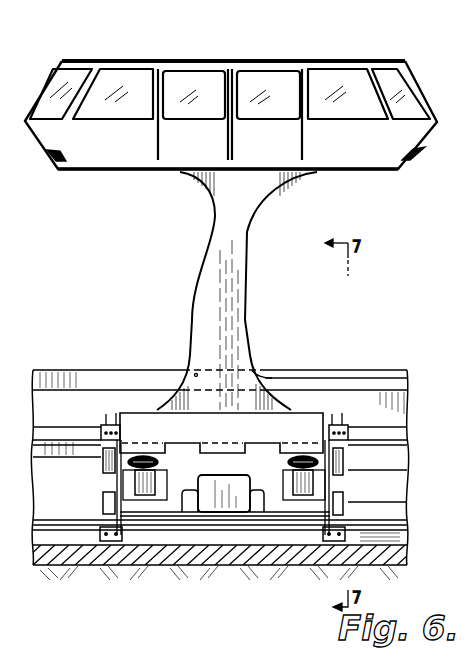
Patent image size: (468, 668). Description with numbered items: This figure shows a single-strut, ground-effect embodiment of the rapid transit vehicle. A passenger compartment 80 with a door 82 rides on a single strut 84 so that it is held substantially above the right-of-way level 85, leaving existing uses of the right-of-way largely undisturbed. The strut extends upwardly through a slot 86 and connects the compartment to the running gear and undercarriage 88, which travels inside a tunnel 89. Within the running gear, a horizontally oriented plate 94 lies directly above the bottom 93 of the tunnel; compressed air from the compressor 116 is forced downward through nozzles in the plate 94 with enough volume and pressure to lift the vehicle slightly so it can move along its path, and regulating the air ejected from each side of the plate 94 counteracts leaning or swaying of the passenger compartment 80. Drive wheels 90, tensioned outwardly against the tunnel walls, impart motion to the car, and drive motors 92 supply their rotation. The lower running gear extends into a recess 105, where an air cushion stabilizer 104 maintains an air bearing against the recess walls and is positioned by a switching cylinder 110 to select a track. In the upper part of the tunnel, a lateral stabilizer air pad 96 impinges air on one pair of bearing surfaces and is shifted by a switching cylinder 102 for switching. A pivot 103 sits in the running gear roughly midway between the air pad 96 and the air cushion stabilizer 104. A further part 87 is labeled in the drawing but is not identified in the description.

The passenger compartment 80 is at (372, 63).
The door 82 is at (272, 90).
The strut 84 is at (247, 244).
The right-of-way level 85 is at (75, 371).
The slot 86 is at (388, 371).
The beam flange 87 is at (260, 372).
The running gear and undercarriage 88 is at (224, 475).
The tunnel 89 is at (410, 478).
The drive wheels 90 is at (138, 455).
The drive motors 92 is at (156, 522).
The bottom of tunnel 93 is at (386, 526).
The horizontally oriented plate 94 is at (240, 514).
The lateral stabilizer air pad 96 is at (105, 425).
The switching cylinder 102 is at (101, 463).
The pivot 103 is at (252, 443).
The air cushion stabilizer 104 is at (101, 506).
The recess 105 is at (402, 545).
The switching cylinder 110 is at (410, 497).
The compressor 116 is at (205, 502).